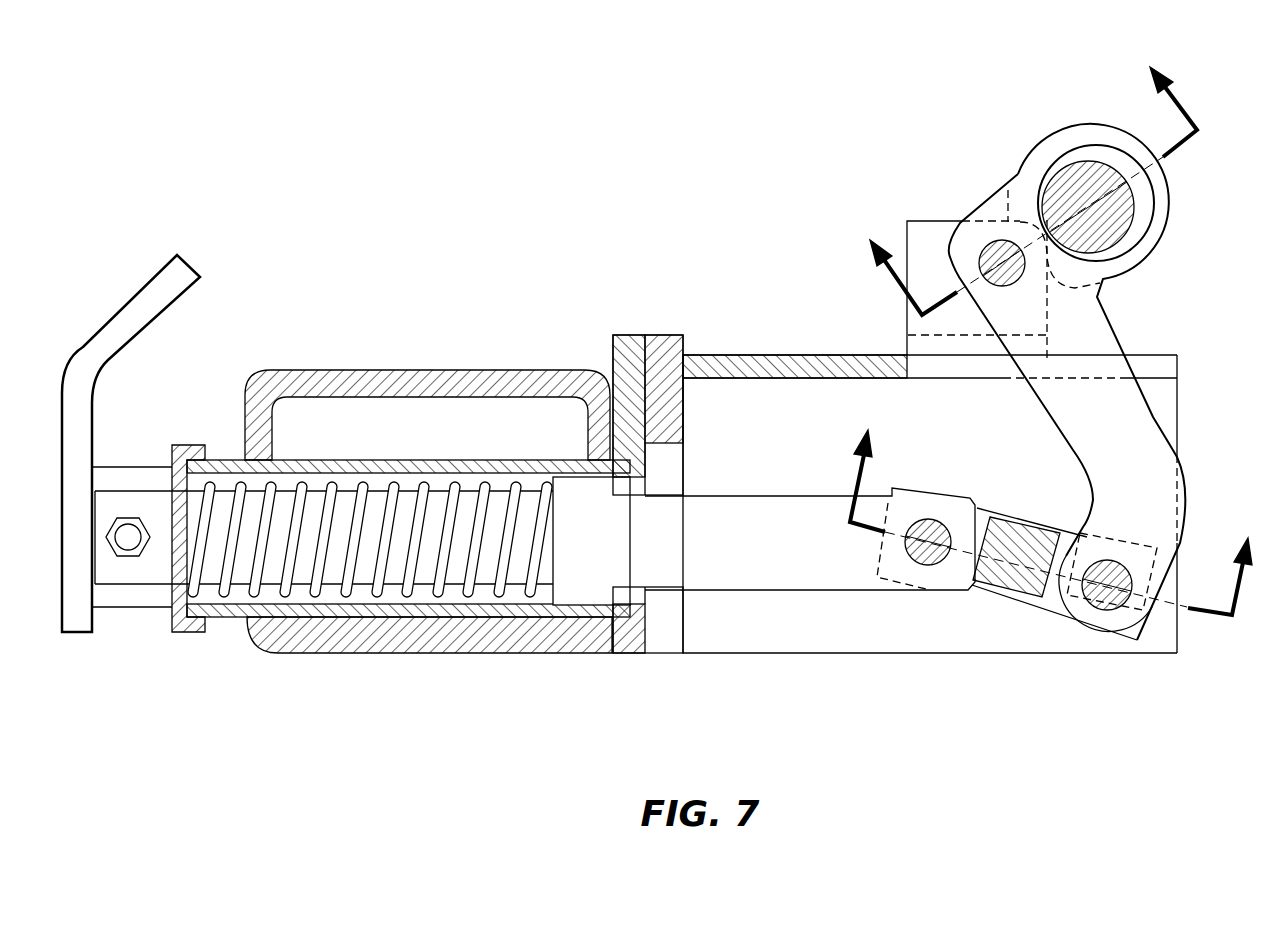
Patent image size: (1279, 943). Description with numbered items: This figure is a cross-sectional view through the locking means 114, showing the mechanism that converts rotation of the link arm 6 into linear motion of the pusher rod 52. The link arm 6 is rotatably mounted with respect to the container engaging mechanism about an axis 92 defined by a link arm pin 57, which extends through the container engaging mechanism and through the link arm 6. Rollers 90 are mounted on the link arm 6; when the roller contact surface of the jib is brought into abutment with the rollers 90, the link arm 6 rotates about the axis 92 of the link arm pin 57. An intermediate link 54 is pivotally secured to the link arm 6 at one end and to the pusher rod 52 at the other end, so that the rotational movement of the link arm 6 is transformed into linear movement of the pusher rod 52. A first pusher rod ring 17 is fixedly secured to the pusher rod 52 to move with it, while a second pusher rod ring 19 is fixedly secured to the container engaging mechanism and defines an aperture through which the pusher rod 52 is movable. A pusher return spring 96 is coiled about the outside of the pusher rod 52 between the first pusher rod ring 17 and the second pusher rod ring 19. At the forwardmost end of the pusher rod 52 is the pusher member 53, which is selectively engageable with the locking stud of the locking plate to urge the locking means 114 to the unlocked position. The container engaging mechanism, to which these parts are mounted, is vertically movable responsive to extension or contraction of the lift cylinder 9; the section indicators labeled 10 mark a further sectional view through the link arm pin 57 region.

The link arm 6 is at (1132, 410).
The lift cylinder 9 is at (1056, 502).
The section line 10- 10 is at (1013, 172).
The first pusher rod ring 17 is at (578, 546).
The second pusher rod ring 19 is at (183, 633).
The pusher rod 52 is at (793, 588).
The pusher member 53 is at (140, 302).
The intermediate link 54 is at (1053, 617).
The link arm pin 57 is at (1017, 292).
The rollers 90 is at (1173, 212).
The axis 92 is at (1000, 260).
The pusher return spring 96 is at (424, 490).
The locking means 114 is at (227, 617).